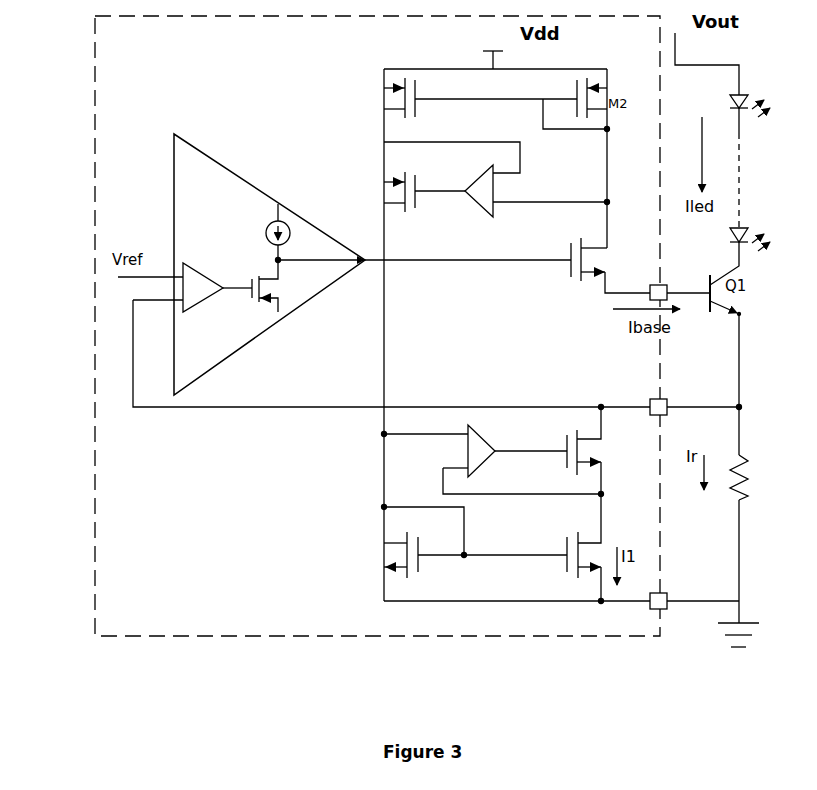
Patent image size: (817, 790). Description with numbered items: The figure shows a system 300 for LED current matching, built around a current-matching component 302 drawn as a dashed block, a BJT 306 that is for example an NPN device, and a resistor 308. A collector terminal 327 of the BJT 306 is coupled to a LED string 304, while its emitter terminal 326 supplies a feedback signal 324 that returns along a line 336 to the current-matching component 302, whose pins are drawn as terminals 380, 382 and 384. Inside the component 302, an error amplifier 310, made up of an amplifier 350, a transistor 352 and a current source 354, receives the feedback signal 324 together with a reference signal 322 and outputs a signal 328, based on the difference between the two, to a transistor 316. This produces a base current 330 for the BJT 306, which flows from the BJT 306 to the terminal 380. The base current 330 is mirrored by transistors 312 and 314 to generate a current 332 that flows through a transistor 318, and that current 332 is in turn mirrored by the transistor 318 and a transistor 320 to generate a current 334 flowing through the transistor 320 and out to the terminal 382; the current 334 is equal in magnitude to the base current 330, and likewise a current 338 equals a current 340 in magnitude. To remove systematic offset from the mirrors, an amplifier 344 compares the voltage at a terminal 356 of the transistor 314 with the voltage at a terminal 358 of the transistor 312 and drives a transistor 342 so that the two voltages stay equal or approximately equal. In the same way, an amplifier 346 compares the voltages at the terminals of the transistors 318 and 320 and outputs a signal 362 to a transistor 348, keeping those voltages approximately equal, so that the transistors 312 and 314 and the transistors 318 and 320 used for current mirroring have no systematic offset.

The system 300 is at (148, 684).
The current-matching component 302 is at (95, 637).
The LED string 304 is at (748, 232).
The BJT 306 is at (740, 313).
The resistor 308 is at (748, 487).
The error amplifier 310 is at (212, 159).
The transistor 312 is at (384, 116).
The transistor 314 is at (600, 113).
The transistor 316 is at (580, 282).
The transistor 318 is at (412, 576).
The transistor 320 is at (573, 574).
The reference signal 322 is at (137, 279).
The feedback signal 324 is at (195, 408).
The emitter terminal 326 is at (738, 316).
The collector terminal 327 is at (740, 272).
The signal 328 is at (404, 262).
The base current 330 is at (622, 292).
The current 332 is at (384, 336).
The current 334 is at (602, 602).
The sense line 336 is at (740, 368).
The current 338 is at (741, 68).
The current 340 is at (740, 543).
The transistor 342 is at (412, 214).
The amplifier 344 is at (476, 212).
The amplifier 346 is at (484, 440).
The transistor 348 is at (575, 435).
The amplifier 350 is at (200, 306).
The transistor 352 is at (268, 294).
The current source 354 is at (288, 226).
The terminal 356 is at (607, 201).
The terminal 358 is at (386, 143).
The signal 362 is at (516, 452).
The terminal 380 is at (679, 277).
The terminal 382 is at (662, 415).
The ground pin 384 is at (667, 596).